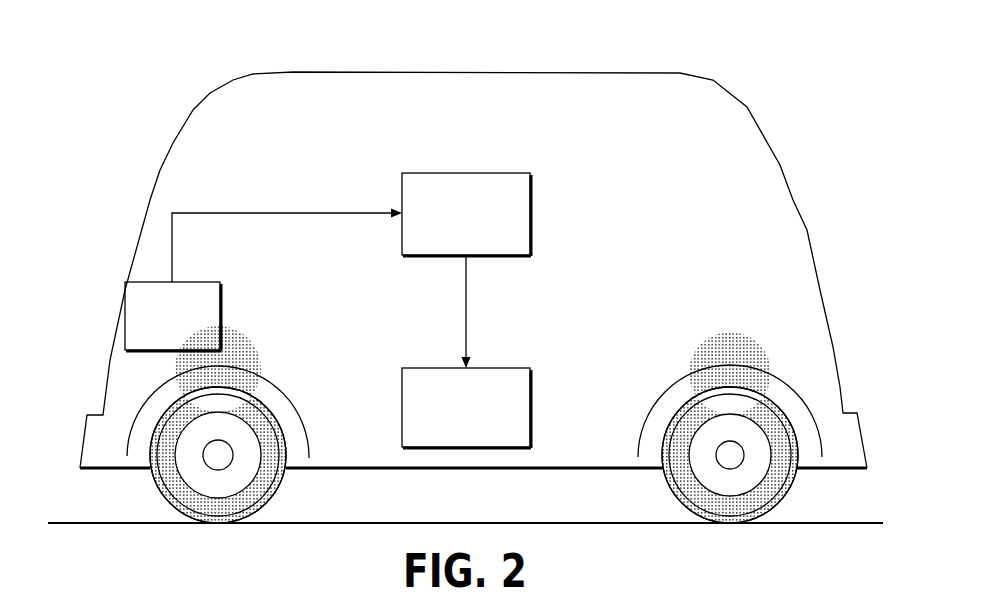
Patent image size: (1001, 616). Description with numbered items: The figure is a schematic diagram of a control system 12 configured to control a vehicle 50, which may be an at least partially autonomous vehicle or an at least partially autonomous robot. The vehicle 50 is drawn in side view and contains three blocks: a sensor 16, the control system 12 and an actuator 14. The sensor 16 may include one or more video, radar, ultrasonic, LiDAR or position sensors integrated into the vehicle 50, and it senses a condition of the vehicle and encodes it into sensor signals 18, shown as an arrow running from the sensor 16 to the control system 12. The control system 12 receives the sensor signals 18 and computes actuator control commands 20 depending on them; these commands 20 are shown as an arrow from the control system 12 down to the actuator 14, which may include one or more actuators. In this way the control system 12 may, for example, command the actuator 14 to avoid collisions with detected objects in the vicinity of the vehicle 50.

The vehicle 50 is at (505, 52).
The control system 12 is at (466, 173).
The actuator 14 is at (495, 368).
The sensor 16 is at (192, 282).
The sensor signals 18 is at (257, 213).
The actuator control commands 20 is at (462, 326).